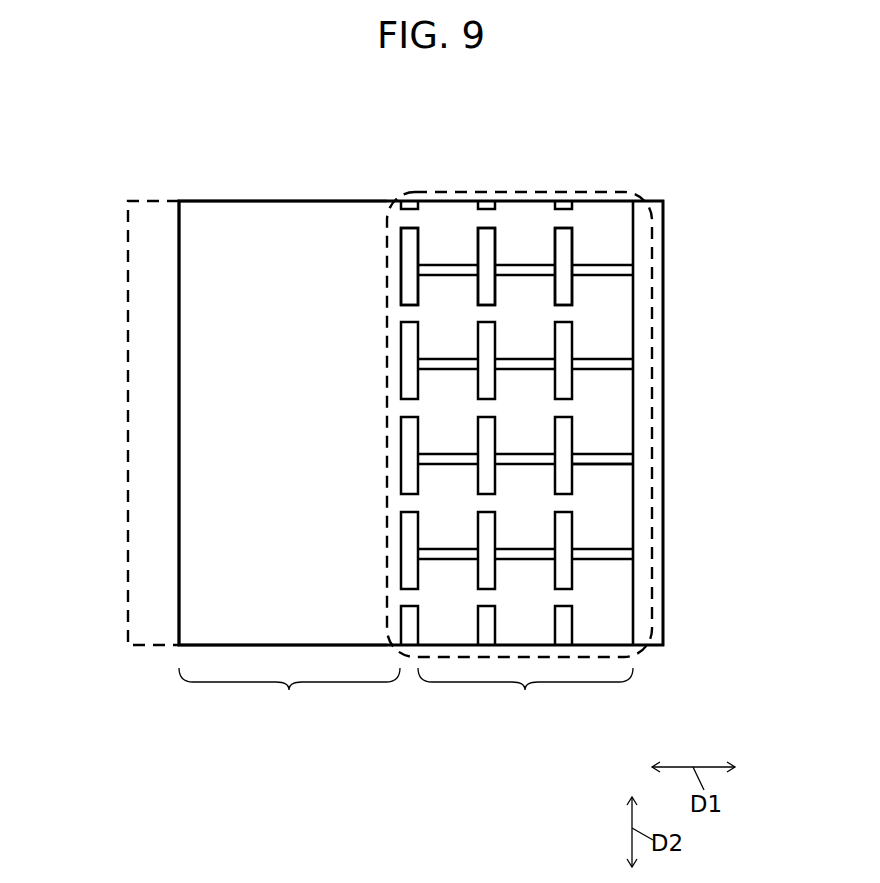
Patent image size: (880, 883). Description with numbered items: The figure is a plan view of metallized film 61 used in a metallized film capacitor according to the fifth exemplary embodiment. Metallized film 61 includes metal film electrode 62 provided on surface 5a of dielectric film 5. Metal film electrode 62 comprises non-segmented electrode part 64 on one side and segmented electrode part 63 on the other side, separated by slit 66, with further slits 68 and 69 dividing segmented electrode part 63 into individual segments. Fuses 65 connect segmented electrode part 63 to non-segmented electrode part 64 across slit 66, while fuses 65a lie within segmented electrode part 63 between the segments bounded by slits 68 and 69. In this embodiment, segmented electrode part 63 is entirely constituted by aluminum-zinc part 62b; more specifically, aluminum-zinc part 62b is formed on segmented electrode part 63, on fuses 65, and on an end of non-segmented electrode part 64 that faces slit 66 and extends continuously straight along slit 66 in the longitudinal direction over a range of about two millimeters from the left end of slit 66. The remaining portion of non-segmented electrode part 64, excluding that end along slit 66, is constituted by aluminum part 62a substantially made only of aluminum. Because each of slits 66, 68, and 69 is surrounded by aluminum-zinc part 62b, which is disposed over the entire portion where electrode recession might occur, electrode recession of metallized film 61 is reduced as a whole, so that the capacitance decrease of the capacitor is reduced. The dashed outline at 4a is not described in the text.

The flap portion 4a is at (157, 200).
The dielectric film 5 is at (655, 238).
The surface of dielectric film 5a is at (653, 208).
The metallized film 61 is at (680, 200).
The metal film electrode 62 is at (223, 318).
The aluminum part 62a is at (231, 242).
The aluminum-zinc part 62b is at (388, 613).
The segmented electrode part 63 is at (525, 695).
The non-segmented electrode part 64 is at (289, 695).
The fuses 65 is at (408, 506).
The fuses 65a is at (488, 505).
The slit 66 is at (408, 243).
The slits 68 is at (487, 243).
The slits 69 is at (613, 463).